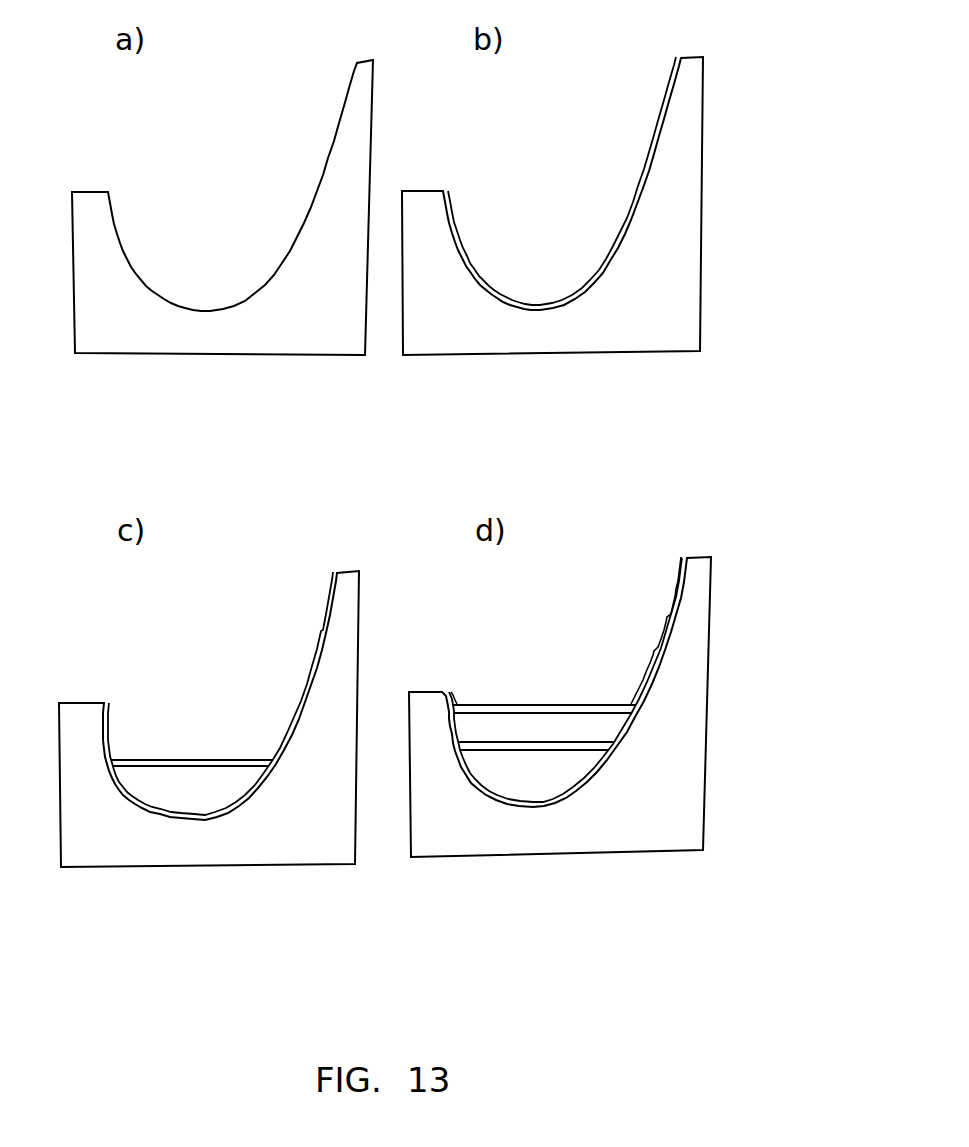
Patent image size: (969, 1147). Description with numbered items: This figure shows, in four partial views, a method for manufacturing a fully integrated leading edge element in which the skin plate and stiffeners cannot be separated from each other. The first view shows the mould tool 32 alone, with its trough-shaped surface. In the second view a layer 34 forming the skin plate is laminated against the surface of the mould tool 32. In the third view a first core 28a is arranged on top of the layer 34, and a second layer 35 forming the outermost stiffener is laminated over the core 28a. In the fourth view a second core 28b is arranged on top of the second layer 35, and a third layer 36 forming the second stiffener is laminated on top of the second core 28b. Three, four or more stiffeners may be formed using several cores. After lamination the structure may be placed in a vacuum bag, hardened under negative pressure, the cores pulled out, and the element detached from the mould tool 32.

The mould tool 32 is at (128, 330).
The layer forming the skin plate 34 is at (637, 205).
The second layer forming the outermost stiffener 35 is at (177, 760).
The third layer forming the second stiffener 36 is at (517, 706).
The first core 28a is at (209, 805).
The second core 28b is at (562, 725).